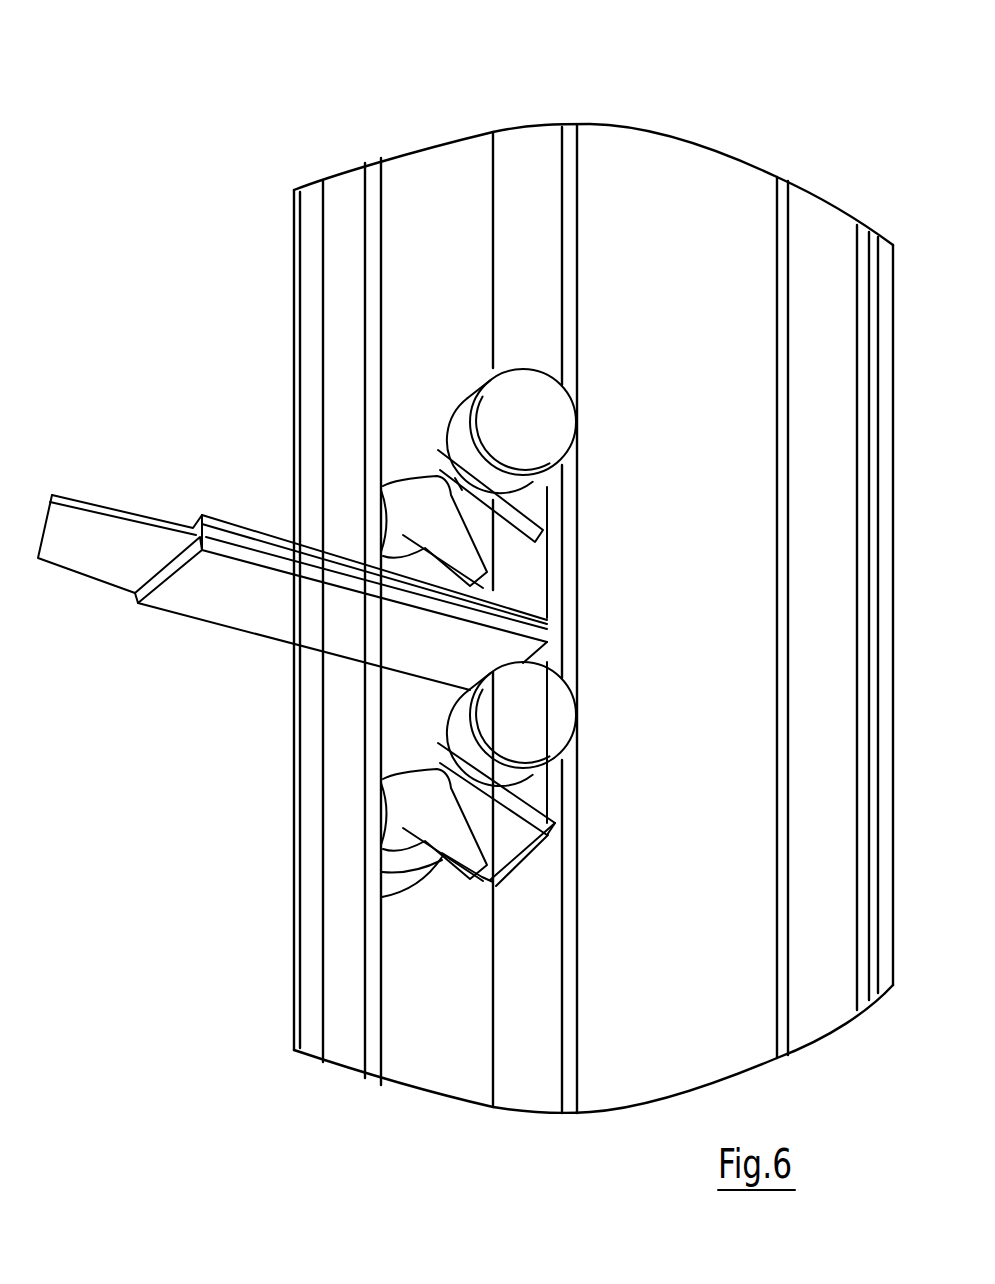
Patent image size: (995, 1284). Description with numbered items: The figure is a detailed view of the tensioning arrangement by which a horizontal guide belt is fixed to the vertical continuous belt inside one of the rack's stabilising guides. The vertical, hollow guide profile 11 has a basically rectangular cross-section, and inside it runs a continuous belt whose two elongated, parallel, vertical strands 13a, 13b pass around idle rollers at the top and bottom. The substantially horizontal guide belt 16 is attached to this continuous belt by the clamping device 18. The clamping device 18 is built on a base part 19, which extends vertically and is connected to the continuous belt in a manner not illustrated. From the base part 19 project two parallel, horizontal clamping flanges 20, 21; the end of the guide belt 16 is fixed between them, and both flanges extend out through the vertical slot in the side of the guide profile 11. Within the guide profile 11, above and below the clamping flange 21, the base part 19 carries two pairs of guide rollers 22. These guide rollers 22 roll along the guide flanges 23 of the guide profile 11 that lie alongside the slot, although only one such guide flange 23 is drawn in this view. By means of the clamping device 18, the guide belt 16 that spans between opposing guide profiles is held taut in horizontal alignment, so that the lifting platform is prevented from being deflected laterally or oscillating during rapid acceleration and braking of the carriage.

The guide profile 11 is at (437, 172).
The vertical strand of continuous belt 13a is at (803, 267).
The vertical strand of continuous belt 13b is at (538, 238).
The guide belt 16 is at (90, 537).
The clamping device 18 is at (408, 442).
The base part 19 is at (553, 582).
The clamping flange 20 is at (227, 588).
The clamping flange 21 is at (222, 527).
The guide roller 22 is at (518, 425).
The guide flange 23 is at (332, 238).